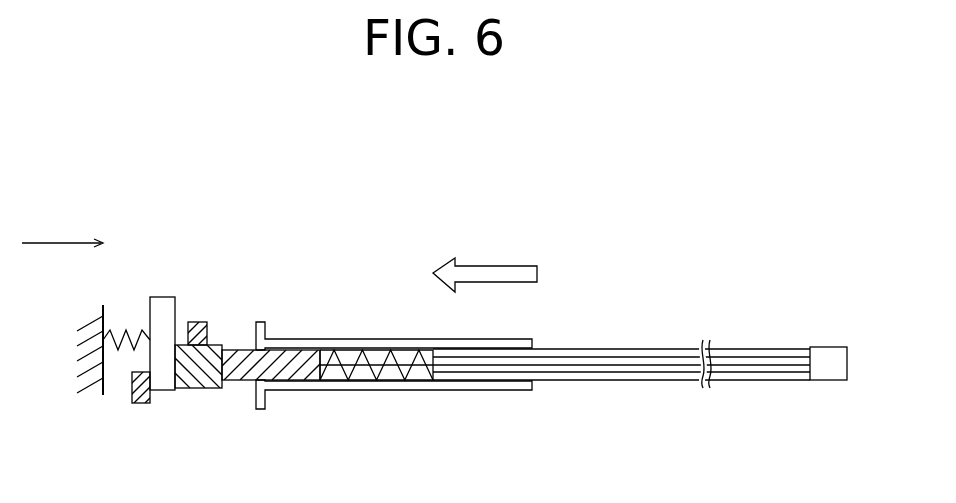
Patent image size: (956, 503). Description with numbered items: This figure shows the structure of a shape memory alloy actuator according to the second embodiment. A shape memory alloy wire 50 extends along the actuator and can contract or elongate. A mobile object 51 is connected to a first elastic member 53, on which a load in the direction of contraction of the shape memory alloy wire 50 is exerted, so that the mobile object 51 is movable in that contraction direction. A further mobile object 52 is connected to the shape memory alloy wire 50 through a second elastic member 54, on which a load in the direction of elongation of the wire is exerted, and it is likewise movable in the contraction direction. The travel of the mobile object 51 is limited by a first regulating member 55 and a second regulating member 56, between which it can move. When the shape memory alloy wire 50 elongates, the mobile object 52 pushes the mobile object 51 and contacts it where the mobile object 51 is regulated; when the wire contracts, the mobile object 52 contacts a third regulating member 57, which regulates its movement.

The shape memory alloy wire 50 is at (602, 362).
The mobile object 51 is at (162, 297).
The mobile object 52 is at (212, 357).
The first elastic member 53 is at (127, 330).
The second elastic member 54 is at (377, 360).
The first regulating member 55 is at (140, 405).
The second regulating member 56 is at (197, 322).
The third regulating member 57 is at (255, 392).